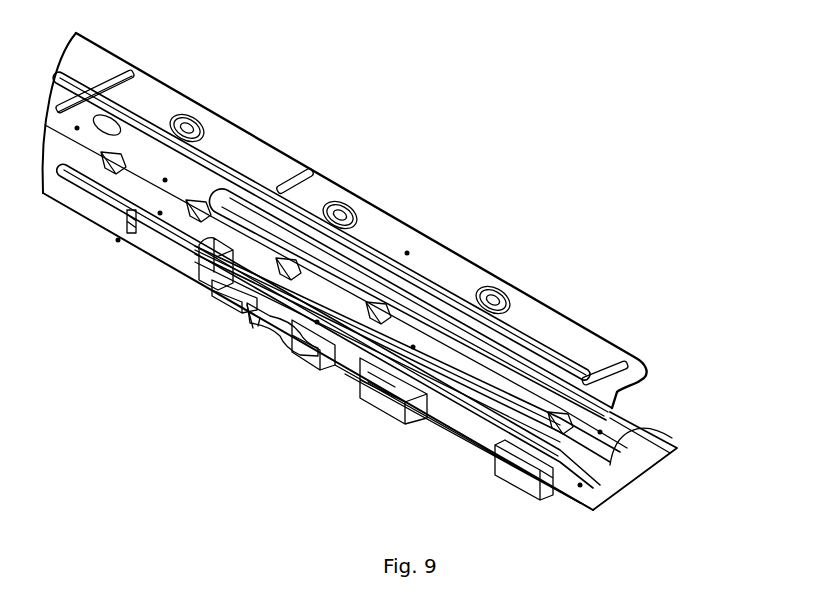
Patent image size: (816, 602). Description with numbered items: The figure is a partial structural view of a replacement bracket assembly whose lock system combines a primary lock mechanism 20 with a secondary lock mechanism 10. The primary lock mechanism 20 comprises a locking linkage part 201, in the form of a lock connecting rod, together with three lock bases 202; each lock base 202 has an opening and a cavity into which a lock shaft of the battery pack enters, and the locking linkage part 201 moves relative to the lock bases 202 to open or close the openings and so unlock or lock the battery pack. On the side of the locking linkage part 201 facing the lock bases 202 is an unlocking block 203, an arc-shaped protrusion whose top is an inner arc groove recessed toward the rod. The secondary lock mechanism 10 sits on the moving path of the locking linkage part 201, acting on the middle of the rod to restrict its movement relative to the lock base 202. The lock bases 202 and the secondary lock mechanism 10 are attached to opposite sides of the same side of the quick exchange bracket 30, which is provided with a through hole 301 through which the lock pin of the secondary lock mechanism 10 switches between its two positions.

The secondary lock mechanism 10 is at (413, 347).
The primary lock mechanism 20 is at (140, 370).
The locking linkage part 201 is at (290, 333).
The lock base 202 is at (228, 318).
The unlocking block 203 is at (330, 358).
The quick exchange bracket 30 is at (640, 423).
The through hole 301 is at (400, 398).